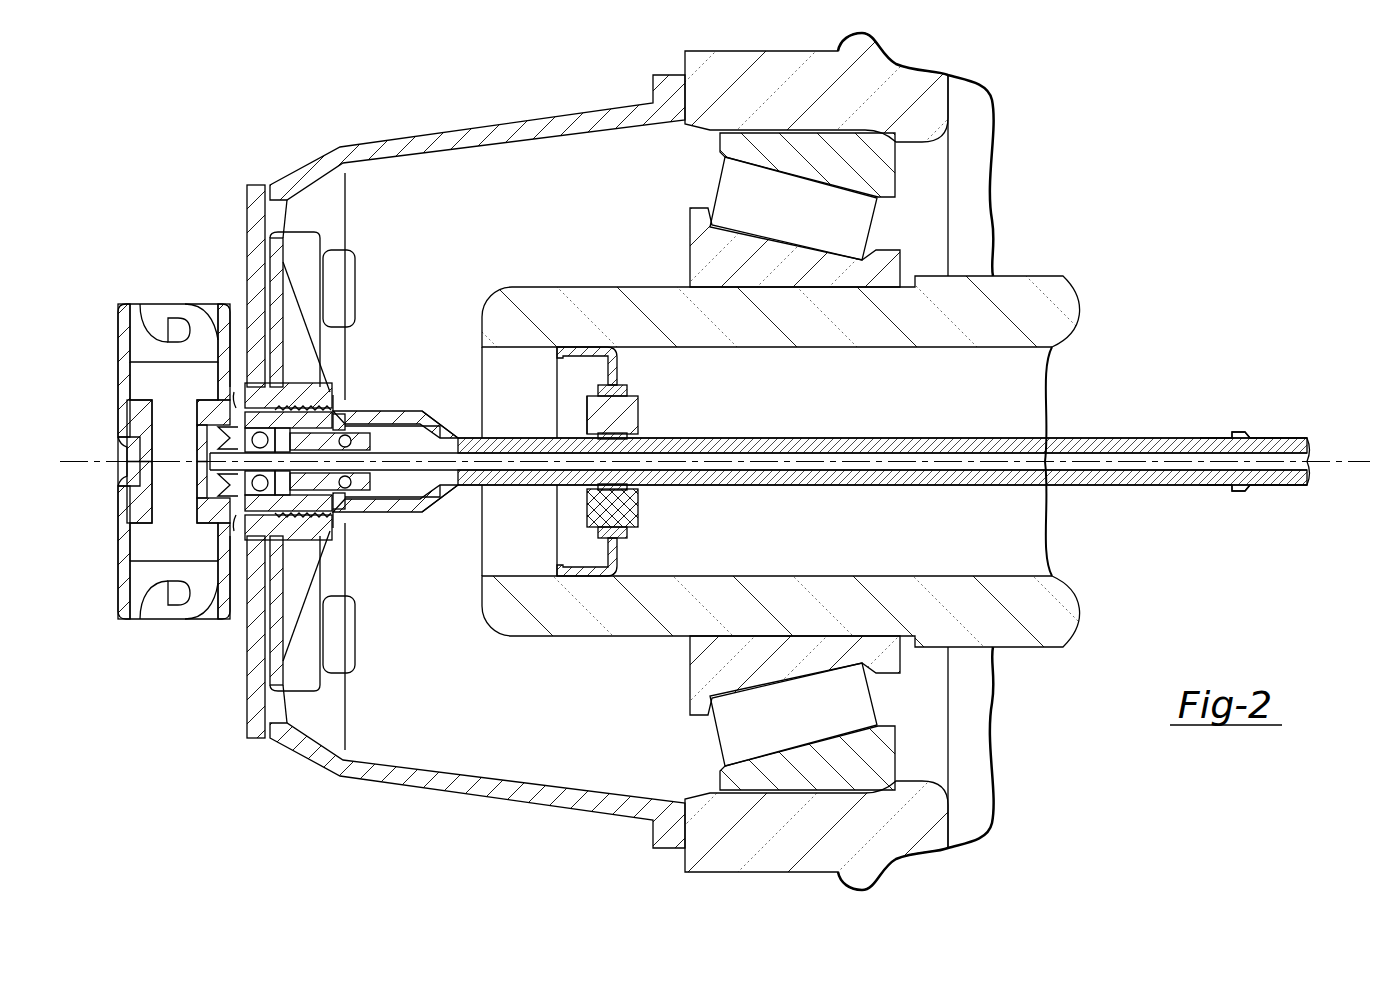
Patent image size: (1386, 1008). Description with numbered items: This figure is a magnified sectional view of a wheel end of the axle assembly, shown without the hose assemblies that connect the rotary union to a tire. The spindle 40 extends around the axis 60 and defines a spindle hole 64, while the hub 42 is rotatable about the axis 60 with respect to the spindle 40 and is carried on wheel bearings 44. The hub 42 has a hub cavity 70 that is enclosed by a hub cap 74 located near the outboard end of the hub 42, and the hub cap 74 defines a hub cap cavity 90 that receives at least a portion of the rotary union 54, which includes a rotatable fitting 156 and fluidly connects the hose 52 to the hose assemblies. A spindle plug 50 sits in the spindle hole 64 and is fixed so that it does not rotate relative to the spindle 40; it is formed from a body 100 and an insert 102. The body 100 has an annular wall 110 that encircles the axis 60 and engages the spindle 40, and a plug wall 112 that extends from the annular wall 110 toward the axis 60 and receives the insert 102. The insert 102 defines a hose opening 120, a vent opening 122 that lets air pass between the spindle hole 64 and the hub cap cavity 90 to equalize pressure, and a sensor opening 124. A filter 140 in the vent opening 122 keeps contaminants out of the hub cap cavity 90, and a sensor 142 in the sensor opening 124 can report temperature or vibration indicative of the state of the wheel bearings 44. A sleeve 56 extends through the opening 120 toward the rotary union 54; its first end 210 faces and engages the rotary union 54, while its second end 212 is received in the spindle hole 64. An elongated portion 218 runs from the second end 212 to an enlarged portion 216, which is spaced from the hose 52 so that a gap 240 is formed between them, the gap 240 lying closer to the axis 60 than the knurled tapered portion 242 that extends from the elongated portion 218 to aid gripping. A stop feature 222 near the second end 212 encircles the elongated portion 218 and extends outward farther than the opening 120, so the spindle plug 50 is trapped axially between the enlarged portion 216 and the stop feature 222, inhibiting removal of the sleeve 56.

The spindle 40 is at (1012, 275).
The hub 42 is at (948, 101).
The wheel bearing 44 is at (897, 165).
The spindle plug 50 is at (606, 408).
The hose 52 is at (1268, 487).
The rotary union 54 is at (118, 428).
The sleeve 56 is at (764, 438).
The axis 60 is at (1348, 465).
The spindle hole 64 is at (909, 407).
The hub cavity 70 is at (909, 710).
The hub cap 74 is at (480, 128).
The hub cap cavity 90 is at (424, 254).
The body 100 is at (592, 575).
The insert 102 is at (617, 528).
The annular wall 110 is at (557, 372).
The plug wall 112 is at (617, 370).
The opening 120 is at (641, 435).
The vent opening 122 is at (598, 408).
The sensor opening 124 is at (596, 515).
The filter 140 is at (627, 390).
The sensor 142 is at (640, 510).
The rotatable fitting 156 is at (120, 540).
The first end 210 is at (318, 410).
The second end 212 is at (1250, 440).
The enlarged portion 216 is at (333, 403).
The elongated portion 218 is at (768, 487).
The stop feature 222 is at (1237, 436).
The gap 240 is at (447, 437).
The tapered portion 242 is at (450, 490).